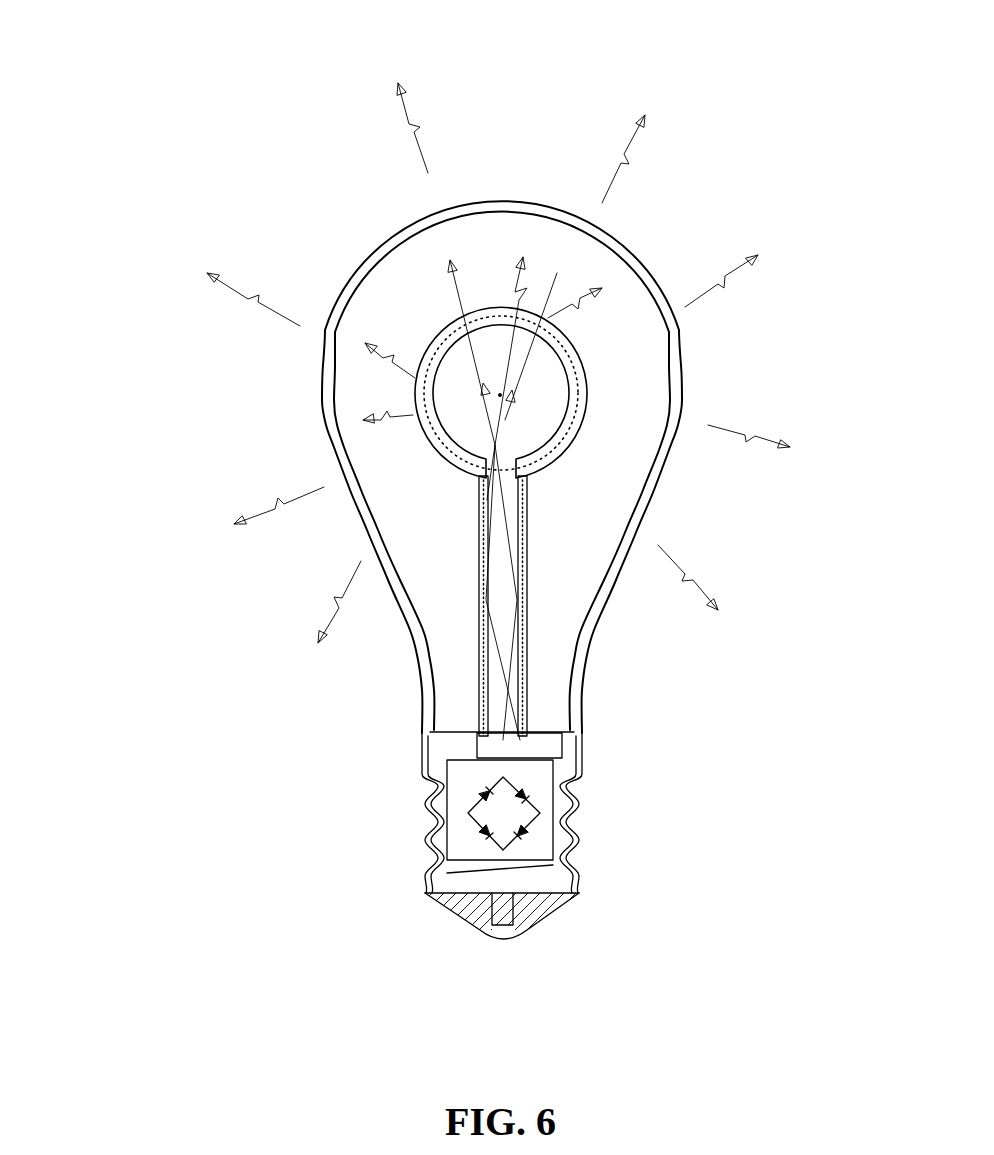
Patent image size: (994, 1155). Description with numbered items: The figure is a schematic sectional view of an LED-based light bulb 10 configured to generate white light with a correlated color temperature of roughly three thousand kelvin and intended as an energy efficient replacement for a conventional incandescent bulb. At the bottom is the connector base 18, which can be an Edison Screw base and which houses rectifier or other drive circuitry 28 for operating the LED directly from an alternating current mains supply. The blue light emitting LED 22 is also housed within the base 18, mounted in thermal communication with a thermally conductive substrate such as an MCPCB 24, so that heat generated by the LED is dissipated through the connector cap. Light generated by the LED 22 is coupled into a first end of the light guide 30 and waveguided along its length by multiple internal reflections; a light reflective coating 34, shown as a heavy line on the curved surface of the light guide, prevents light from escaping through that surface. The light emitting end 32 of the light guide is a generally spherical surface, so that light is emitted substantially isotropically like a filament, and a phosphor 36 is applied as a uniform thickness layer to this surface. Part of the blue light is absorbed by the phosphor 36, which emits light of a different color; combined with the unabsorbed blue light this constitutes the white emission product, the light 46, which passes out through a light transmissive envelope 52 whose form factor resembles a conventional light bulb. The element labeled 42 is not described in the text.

The LED-based light bulb 10 is at (121, 622).
The connector base 18 is at (565, 866).
The LED 22 is at (503, 752).
The MCPCB 24 is at (540, 779).
The rectifier circuitry 28 is at (477, 798).
The light guide 30 is at (500, 654).
The light emitting surface 32 is at (535, 399).
The light reflective coating 34 is at (525, 521).
The phosphor 36 is at (572, 373).
The light-emitting element 42 is at (485, 407).
The light 46 is at (413, 110).
The light transmissive envelope 52 is at (630, 247).